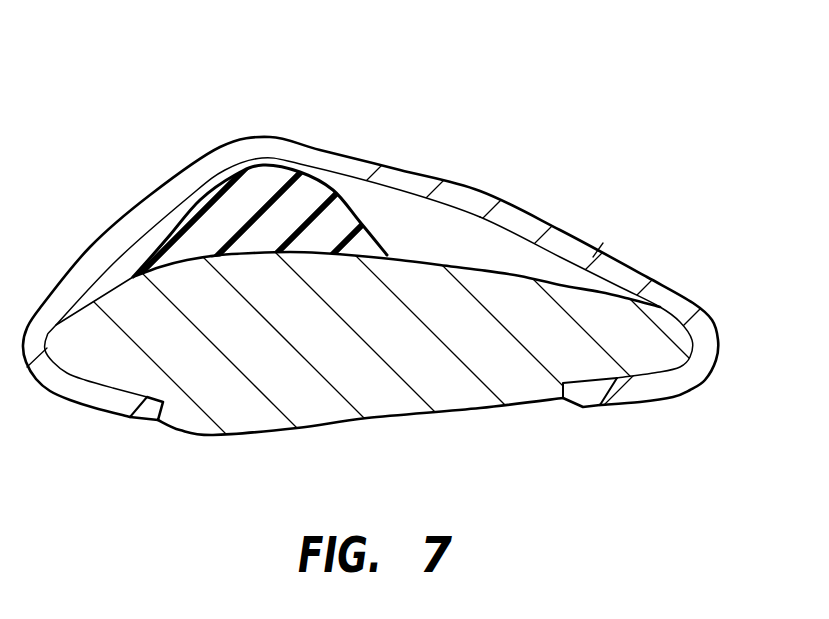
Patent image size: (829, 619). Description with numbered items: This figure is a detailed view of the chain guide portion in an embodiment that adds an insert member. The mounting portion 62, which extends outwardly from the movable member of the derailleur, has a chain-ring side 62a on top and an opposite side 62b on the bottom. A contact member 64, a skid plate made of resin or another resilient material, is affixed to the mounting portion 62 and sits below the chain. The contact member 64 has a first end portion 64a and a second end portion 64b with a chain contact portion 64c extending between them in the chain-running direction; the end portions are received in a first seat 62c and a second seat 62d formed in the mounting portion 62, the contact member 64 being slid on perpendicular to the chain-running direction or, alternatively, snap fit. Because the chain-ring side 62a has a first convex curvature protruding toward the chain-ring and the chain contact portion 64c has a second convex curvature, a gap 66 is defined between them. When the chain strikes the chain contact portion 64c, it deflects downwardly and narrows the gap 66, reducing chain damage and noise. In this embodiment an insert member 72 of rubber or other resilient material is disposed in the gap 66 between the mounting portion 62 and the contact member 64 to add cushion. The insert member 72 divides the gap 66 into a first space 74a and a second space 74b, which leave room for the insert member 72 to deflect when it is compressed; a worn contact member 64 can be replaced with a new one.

The mounting portion 62 is at (483, 357).
The chain-ring side 62a is at (520, 273).
The opposite side 62b is at (228, 437).
The first seat 62c is at (115, 388).
The second seat 62d is at (618, 378).
The contact member 64 is at (460, 190).
The first end portion 64a is at (87, 392).
The second end portion 64b is at (667, 388).
The chain contact portion 64c is at (578, 230).
The gap 66 is at (357, 187).
The insert member 72 is at (253, 190).
The first space 74a is at (125, 270).
The second space 74b is at (547, 265).